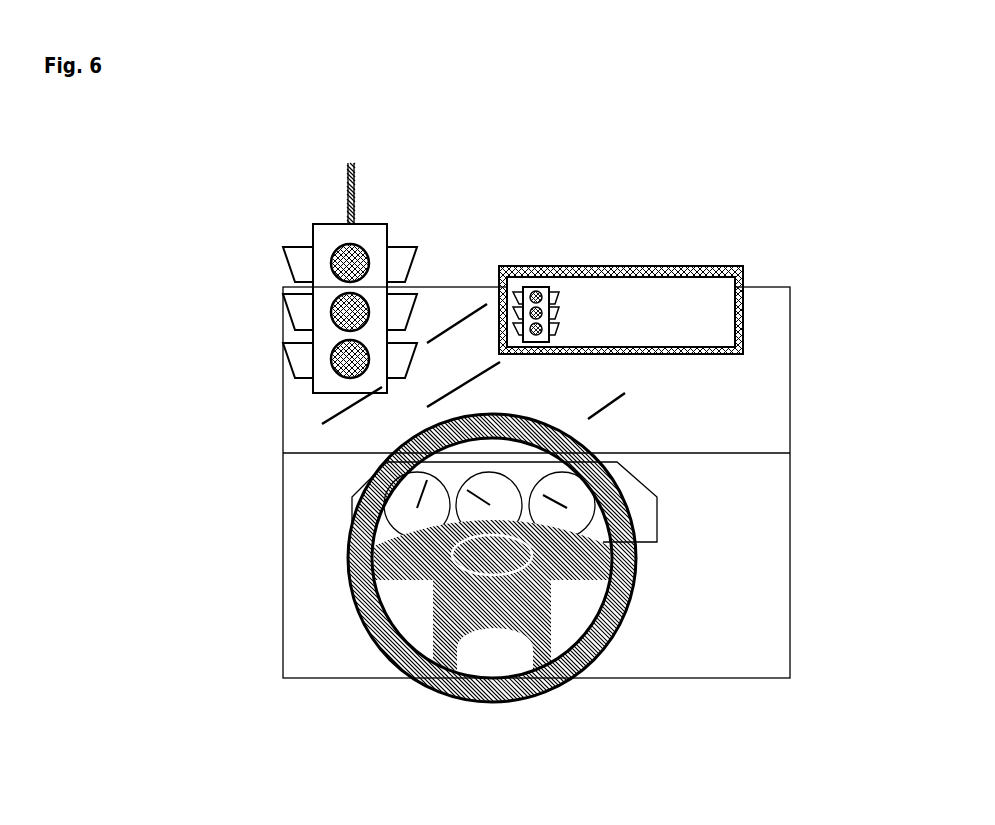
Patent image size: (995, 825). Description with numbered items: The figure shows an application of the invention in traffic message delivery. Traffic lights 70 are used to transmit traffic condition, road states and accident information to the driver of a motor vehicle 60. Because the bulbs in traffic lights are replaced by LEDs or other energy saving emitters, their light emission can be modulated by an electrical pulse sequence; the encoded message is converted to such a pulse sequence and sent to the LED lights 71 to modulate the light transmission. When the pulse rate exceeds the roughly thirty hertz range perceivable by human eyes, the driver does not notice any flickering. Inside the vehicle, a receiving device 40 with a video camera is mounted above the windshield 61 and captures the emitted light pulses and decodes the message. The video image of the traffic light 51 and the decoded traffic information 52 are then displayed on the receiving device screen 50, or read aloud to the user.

The receiving device 40 is at (678, 289).
The receiving device screen 50 is at (682, 299).
The video image of the traffic light 51 is at (558, 287).
The traffic information 52 is at (661, 326).
The motor vehicle 60 is at (266, 466).
The windshield 61 is at (728, 428).
The traffic lights 70 is at (310, 278).
The LED lights 71 is at (367, 250).